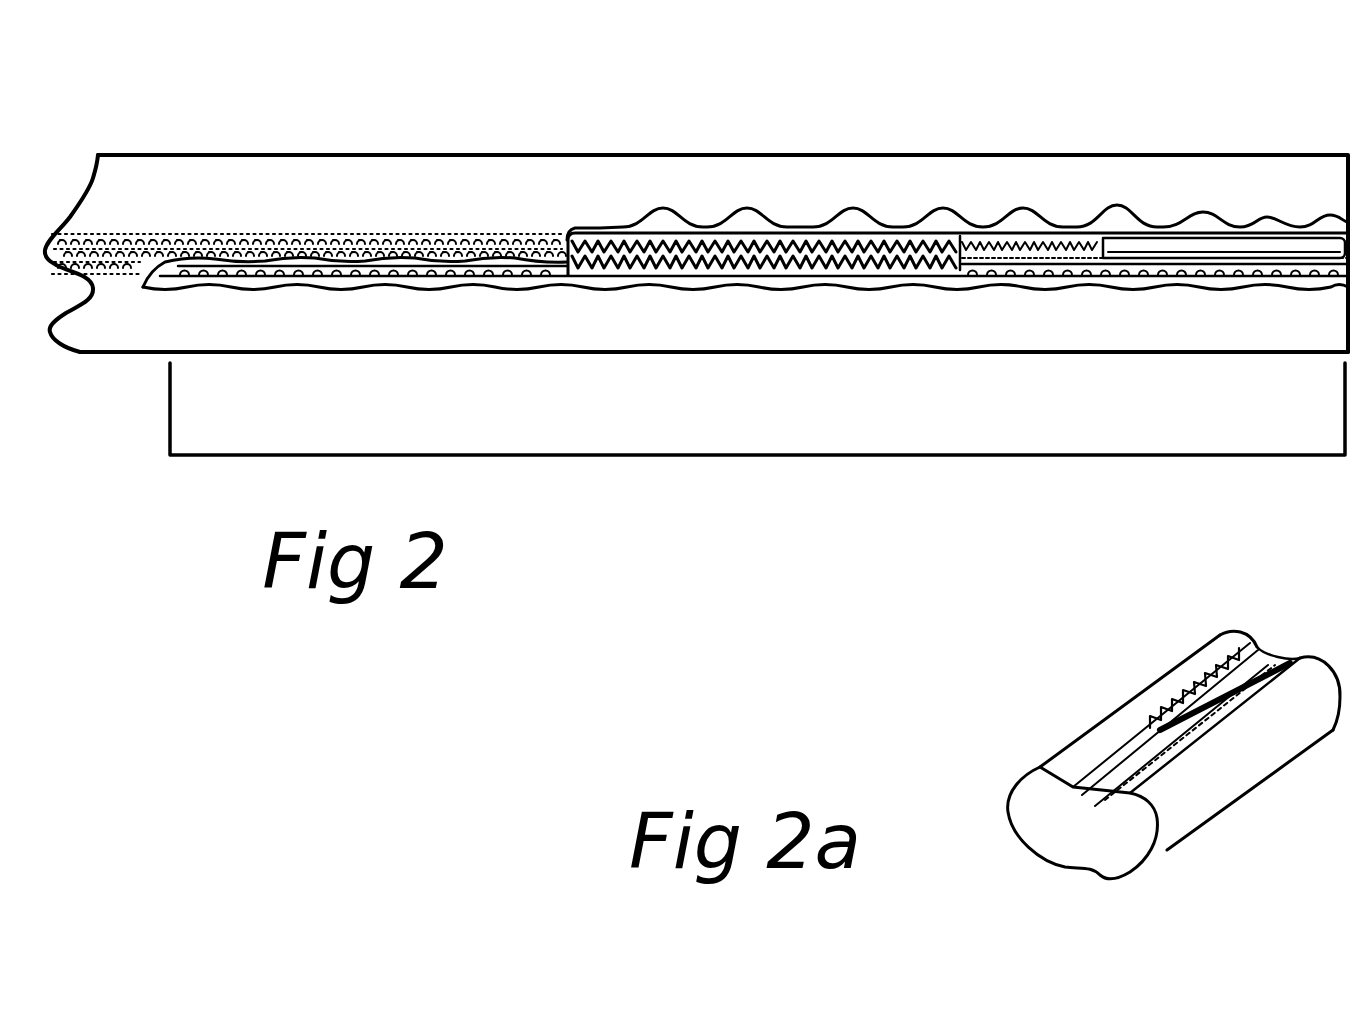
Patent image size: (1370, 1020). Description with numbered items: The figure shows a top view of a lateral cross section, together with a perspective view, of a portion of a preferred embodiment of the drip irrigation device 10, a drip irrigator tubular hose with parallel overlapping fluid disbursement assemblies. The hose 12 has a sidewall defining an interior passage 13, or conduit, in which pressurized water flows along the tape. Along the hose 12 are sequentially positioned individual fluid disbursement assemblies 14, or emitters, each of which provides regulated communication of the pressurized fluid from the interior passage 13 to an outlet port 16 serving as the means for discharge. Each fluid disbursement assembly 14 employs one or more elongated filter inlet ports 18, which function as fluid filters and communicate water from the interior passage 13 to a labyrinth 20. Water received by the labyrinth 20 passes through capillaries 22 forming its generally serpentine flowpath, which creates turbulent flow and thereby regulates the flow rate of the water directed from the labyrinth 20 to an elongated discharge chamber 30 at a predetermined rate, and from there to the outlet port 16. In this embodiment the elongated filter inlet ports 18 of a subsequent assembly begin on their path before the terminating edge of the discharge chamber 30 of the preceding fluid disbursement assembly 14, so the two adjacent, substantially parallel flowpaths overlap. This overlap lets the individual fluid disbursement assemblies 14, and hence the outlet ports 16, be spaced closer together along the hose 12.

In FIG. 2, the drip irrigation device 10 is at (238, 153).
In FIG. 2, the hose 12 is at (380, 322).
In FIG. 2A, the hose 12 is at (1085, 792).
In FIG. 2A, the interior passage 13 is at (1053, 823).
In FIG. 2, the fluid disbursement assembly 14 is at (690, 455).
In FIG. 2, the outlet port 16 is at (400, 248).
In FIG. 2, the filter inlet port 18 is at (983, 277).
In FIG. 2, the labyrinth 20 is at (788, 262).
In FIG. 2, the capillaries 22 is at (763, 257).
In FIG. 2, the discharge chamber 30 is at (1191, 248).